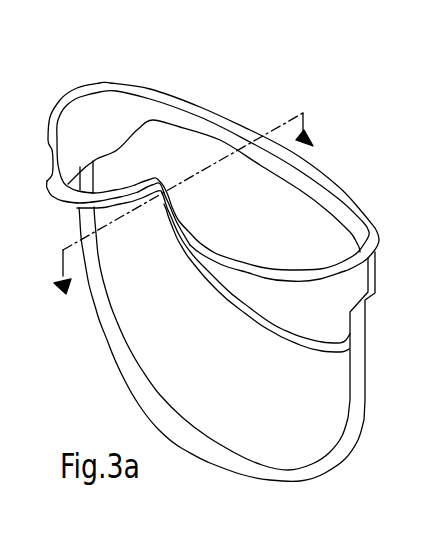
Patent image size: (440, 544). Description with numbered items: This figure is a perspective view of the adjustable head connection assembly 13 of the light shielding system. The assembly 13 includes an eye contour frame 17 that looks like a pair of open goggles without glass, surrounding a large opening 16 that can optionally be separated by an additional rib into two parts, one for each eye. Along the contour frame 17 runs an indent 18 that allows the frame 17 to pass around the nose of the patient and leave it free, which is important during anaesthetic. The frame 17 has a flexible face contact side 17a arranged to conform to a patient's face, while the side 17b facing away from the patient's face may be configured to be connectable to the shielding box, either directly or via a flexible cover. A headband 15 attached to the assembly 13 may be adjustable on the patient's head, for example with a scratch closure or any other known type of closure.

The adjustable head connection assembly 13 is at (244, 84).
The headband 15 is at (118, 350).
The large opening 16 is at (298, 215).
The eye contour frame 17 is at (113, 113).
The flexible face contact side 17a is at (239, 304).
The side facing away from a patient's face 17b is at (340, 197).
The indent 18 is at (156, 207).